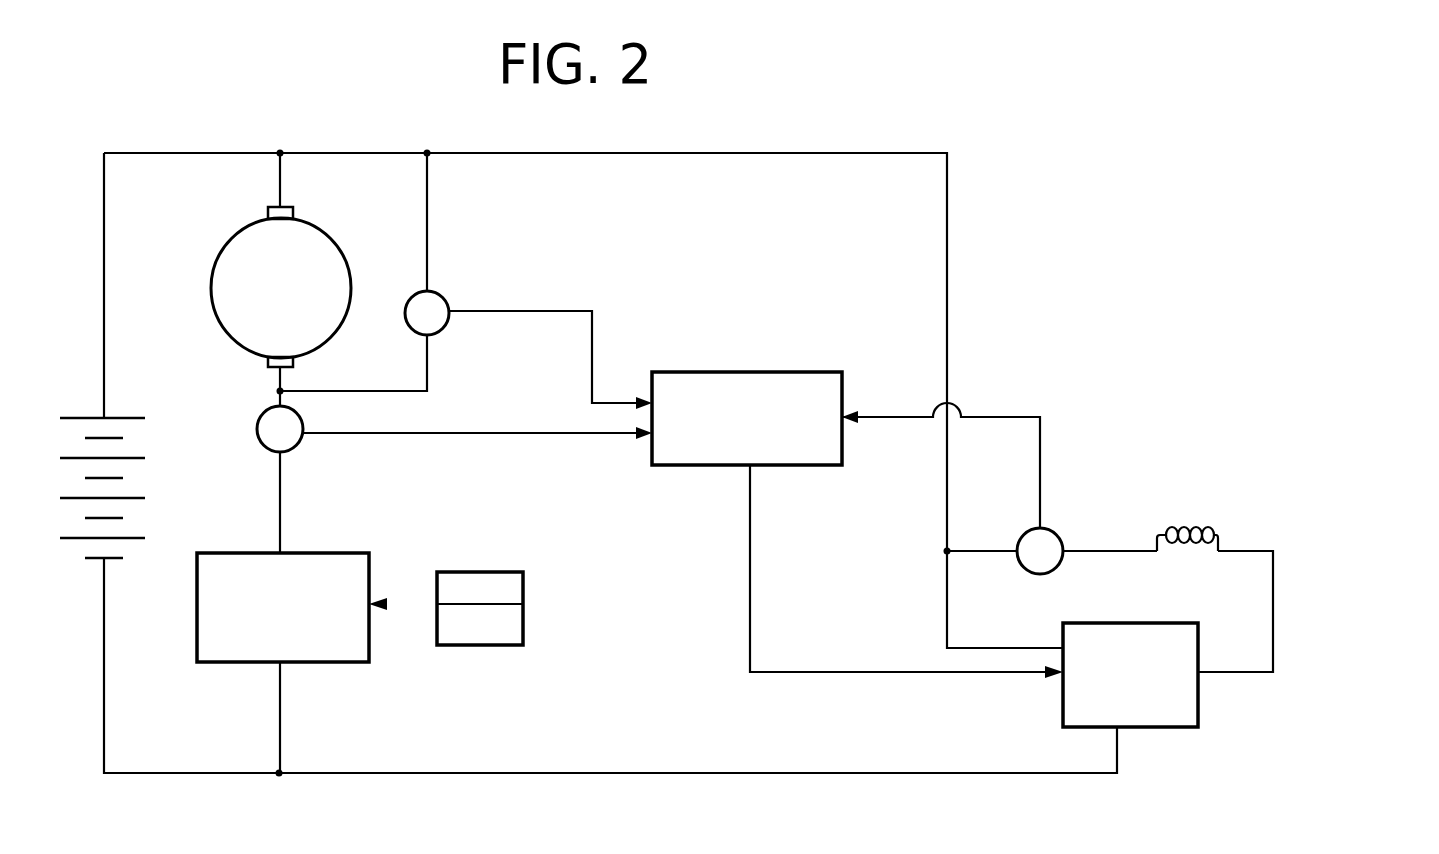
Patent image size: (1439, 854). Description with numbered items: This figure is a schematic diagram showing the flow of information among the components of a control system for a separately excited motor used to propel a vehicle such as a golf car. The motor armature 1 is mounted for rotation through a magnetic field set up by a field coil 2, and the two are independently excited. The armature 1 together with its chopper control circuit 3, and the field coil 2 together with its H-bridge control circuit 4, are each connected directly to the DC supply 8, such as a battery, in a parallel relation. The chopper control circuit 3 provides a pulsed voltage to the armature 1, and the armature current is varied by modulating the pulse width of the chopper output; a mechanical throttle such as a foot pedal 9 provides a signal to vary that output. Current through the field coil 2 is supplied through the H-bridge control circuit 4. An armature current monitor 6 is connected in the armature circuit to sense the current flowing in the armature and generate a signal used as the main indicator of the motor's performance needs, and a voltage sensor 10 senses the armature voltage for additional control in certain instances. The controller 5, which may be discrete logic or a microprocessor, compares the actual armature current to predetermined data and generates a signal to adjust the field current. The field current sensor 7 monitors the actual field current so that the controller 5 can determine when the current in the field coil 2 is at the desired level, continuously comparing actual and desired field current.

The motor armature 1 is at (240, 236).
The field coil 2 is at (1196, 533).
The chopper control circuit 3 is at (308, 553).
The H-bridge control circuit 4 is at (1135, 728).
The controller 5 is at (722, 372).
The armature current monitor 6 is at (262, 412).
The field current sensor 7 is at (1058, 531).
The DC supply 8 is at (135, 440).
The foot pedal 9 is at (462, 572).
The voltage sensor 10 is at (434, 292).